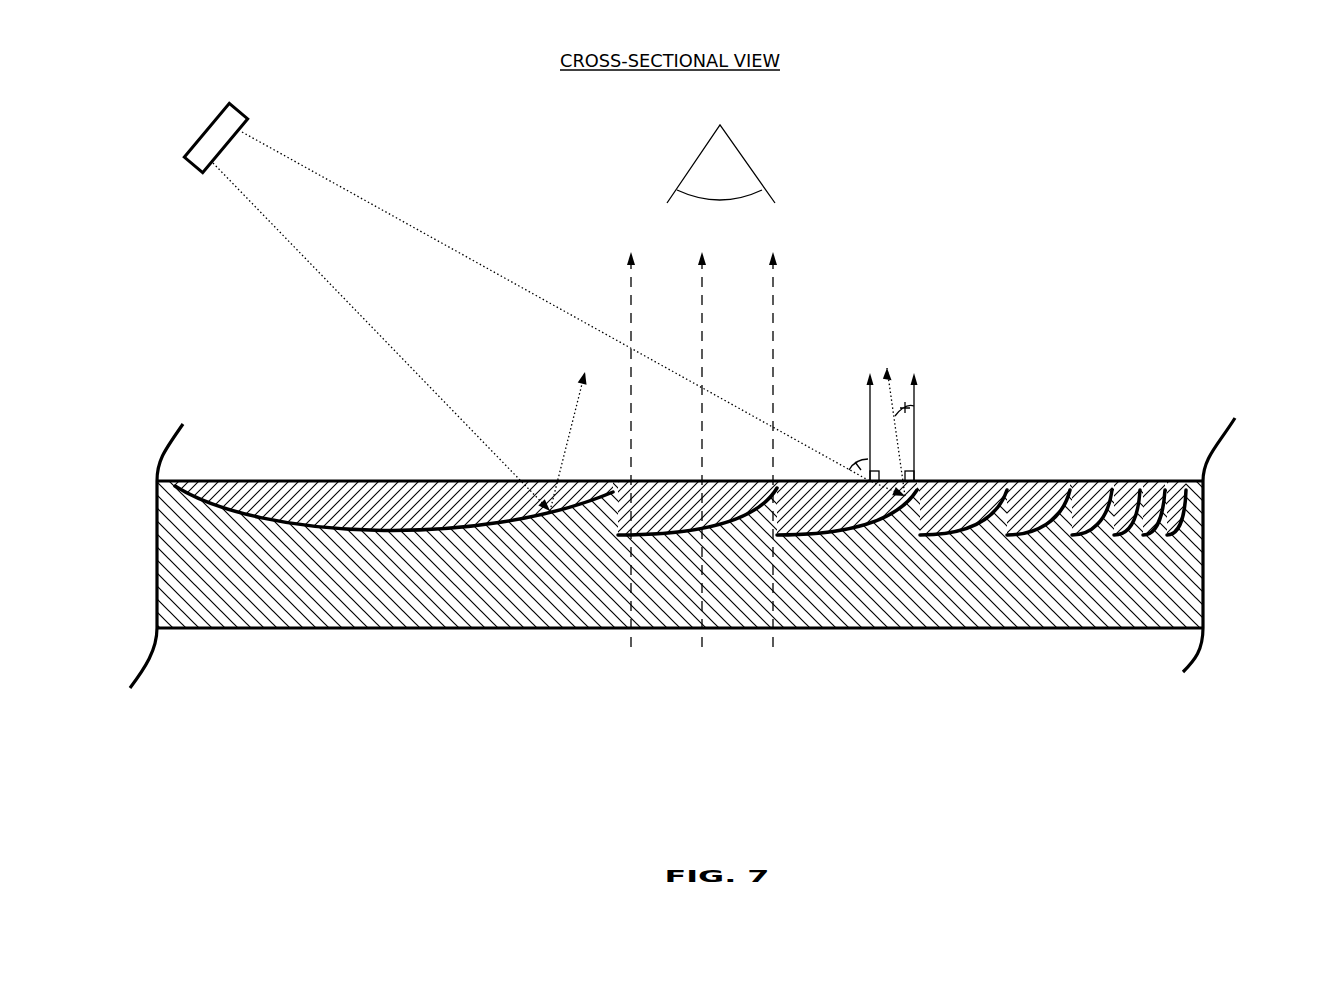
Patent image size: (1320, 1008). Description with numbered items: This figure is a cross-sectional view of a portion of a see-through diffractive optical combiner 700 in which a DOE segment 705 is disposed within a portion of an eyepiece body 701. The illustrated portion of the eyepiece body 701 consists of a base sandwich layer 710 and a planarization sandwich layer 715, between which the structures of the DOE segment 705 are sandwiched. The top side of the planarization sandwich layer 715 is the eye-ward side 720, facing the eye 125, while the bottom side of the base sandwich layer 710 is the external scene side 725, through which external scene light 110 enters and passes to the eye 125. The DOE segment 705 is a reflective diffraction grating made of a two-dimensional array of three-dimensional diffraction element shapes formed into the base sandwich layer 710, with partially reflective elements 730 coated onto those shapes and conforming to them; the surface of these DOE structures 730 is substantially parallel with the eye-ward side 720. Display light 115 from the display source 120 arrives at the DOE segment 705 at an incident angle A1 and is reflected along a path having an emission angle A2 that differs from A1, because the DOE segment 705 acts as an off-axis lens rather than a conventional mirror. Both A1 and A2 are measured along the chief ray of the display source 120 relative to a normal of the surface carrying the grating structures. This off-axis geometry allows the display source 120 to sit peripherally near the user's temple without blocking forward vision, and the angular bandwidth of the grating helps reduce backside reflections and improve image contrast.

The diffractive optical combiner 700 is at (1082, 85).
The eyepiece body 701 is at (1218, 481).
The DOE segment 705 is at (248, 371).
The base sandwich layer 710 is at (259, 586).
The planarization sandwich layer 715 is at (430, 518).
The eye-ward side 720 is at (910, 240).
The external scene side 725 is at (916, 646).
The partially reflective elements 730 is at (342, 535).
The external scene light 110 is at (626, 668).
The display light 115 is at (334, 224).
The display source 120 is at (205, 130).
The eye 125 is at (736, 182).
The incident angle A1 is at (858, 466).
The emission angle A2 is at (905, 406).